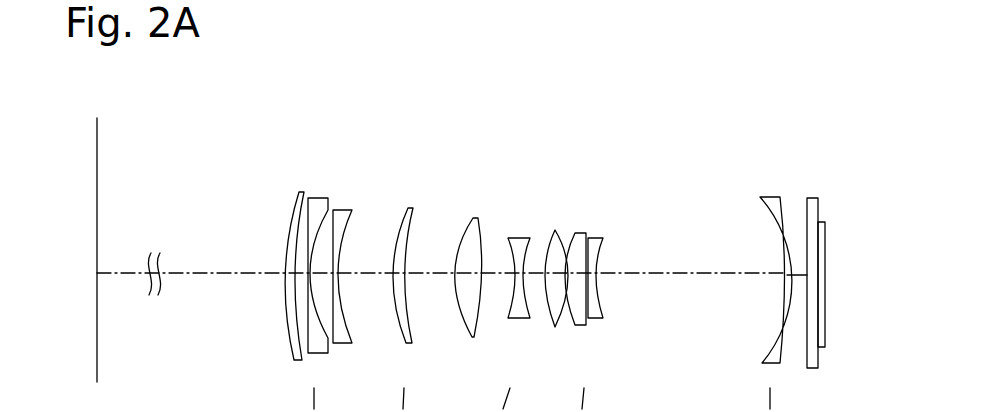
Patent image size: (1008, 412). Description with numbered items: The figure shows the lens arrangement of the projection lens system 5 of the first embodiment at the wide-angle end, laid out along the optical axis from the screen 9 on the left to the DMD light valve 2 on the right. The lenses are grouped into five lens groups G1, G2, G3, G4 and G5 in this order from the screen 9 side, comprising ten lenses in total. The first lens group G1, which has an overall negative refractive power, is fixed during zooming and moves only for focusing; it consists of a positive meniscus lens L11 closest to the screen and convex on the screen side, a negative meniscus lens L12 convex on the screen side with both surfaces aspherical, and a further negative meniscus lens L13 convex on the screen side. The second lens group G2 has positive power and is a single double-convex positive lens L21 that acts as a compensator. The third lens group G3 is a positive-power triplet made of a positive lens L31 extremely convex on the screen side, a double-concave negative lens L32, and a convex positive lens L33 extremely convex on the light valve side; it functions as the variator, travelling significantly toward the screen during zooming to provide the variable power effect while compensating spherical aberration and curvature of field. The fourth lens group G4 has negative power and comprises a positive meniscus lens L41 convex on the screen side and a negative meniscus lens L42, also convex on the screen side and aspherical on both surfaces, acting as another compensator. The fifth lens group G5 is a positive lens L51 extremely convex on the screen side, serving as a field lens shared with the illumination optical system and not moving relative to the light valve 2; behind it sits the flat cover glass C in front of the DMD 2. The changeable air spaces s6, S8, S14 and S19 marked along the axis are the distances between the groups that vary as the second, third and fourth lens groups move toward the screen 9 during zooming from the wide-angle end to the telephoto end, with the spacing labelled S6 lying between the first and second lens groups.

The screen 9 is at (97, 183).
The projection lens system 5 is at (817, 85).
The first lens group G1 is at (393, 134).
The second lens group G2 is at (448, 134).
The third lens group G3 is at (595, 134).
The fourth lens group G4 is at (747, 134).
The fifth lens group G5 is at (825, 134).
The positive meniscus lens L11 is at (295, 212).
The negative meniscus lens L12 is at (322, 198).
The negative meniscus lens L13 is at (338, 210).
The double-convex positive lens L21 is at (409, 208).
The positive lens L31 is at (474, 216).
The double-concave negative lens L32 is at (520, 237).
The convex positive lens L33 is at (555, 229).
The positive meniscus lens L41 is at (590, 231).
The negative meniscus lens L42 is at (598, 236).
The positive lens L51 is at (752, 213).
The lens surface distance s6 S6 is at (431, 274).
The lens surface distance s8 S8 is at (493, 275).
The lens surface distance s14 S14 is at (565, 278).
The lens surface distance s19 S19 is at (653, 275).
The cover glass C is at (818, 198).
The DMD 2 is at (825, 252).